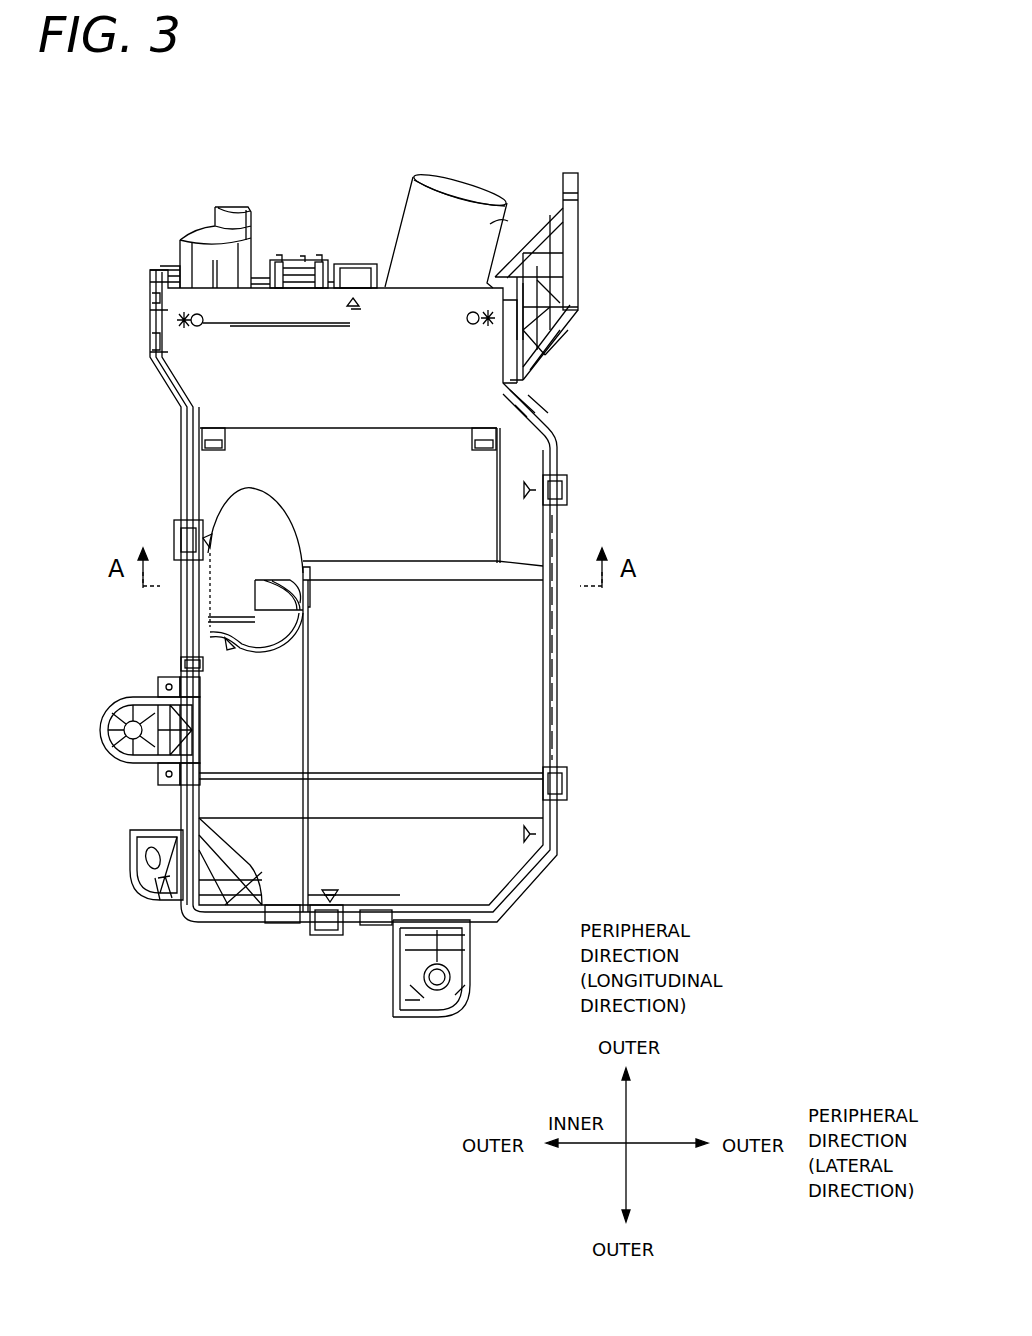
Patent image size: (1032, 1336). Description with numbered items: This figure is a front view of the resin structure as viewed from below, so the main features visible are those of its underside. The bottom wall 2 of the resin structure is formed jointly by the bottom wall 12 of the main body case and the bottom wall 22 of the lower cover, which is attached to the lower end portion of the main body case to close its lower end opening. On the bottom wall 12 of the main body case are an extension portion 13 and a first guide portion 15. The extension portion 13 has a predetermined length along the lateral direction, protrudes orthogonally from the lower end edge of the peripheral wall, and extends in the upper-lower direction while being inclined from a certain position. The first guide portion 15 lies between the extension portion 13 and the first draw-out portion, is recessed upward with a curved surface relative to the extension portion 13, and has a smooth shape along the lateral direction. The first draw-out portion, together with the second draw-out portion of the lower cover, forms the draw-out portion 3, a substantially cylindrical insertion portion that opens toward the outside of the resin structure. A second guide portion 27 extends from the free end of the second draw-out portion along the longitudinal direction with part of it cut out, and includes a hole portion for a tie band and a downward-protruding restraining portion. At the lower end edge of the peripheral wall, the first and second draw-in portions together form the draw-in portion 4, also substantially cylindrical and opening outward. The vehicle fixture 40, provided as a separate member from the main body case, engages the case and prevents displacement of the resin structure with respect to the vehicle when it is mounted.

The bottom wall 2 is at (354, 595).
The draw-out portion 3 is at (250, 533).
The draw-in portion 4 is at (505, 215).
The bottom wall 12 is at (278, 890).
The extension portion 13 is at (222, 668).
The first guide portion 15 is at (225, 637).
The bottom wall 22 is at (353, 890).
The second guide portion 27 is at (233, 598).
The vehicle fixture 40 is at (100, 740).